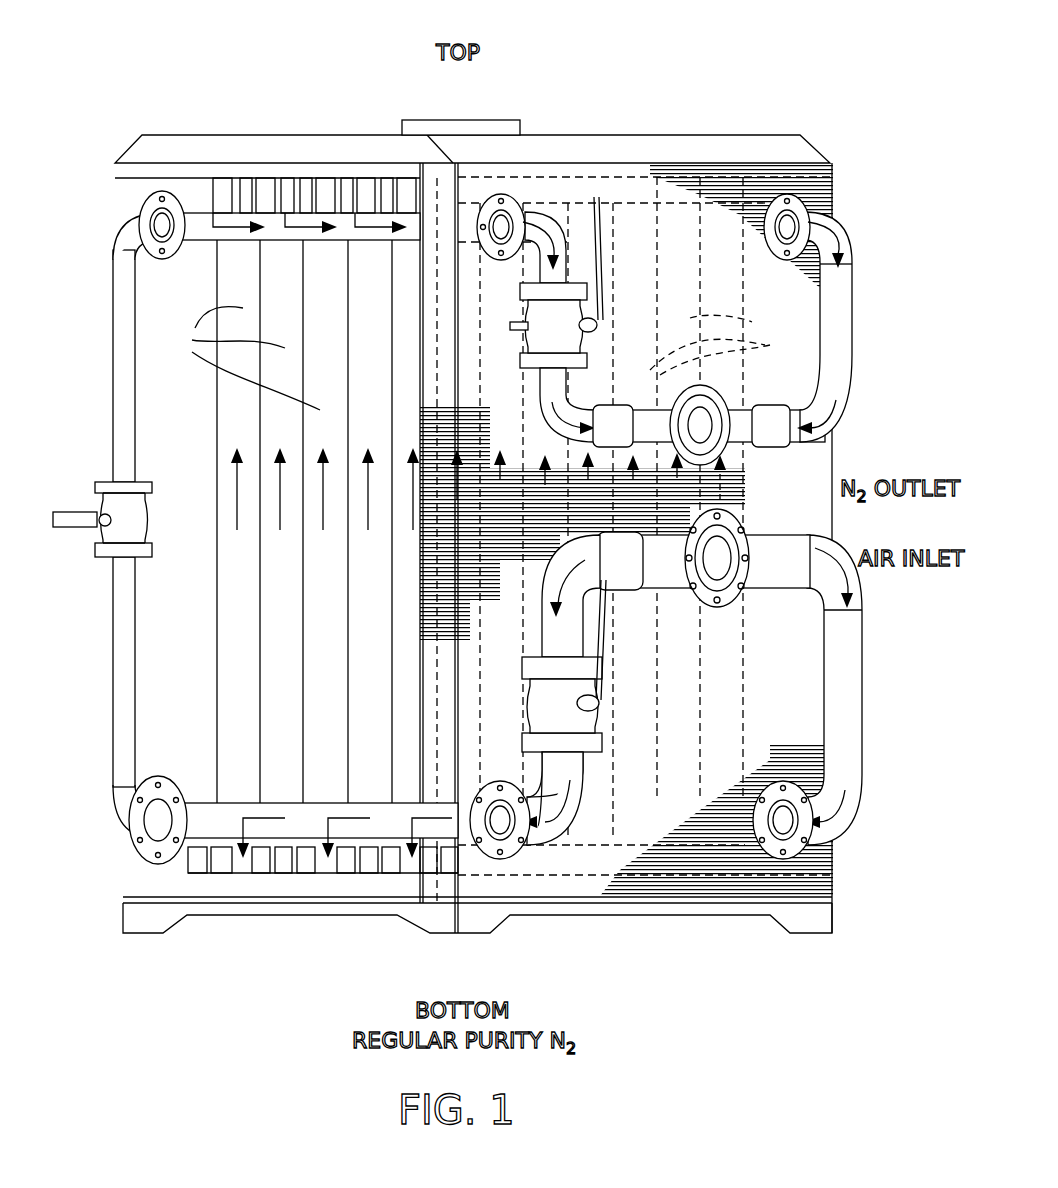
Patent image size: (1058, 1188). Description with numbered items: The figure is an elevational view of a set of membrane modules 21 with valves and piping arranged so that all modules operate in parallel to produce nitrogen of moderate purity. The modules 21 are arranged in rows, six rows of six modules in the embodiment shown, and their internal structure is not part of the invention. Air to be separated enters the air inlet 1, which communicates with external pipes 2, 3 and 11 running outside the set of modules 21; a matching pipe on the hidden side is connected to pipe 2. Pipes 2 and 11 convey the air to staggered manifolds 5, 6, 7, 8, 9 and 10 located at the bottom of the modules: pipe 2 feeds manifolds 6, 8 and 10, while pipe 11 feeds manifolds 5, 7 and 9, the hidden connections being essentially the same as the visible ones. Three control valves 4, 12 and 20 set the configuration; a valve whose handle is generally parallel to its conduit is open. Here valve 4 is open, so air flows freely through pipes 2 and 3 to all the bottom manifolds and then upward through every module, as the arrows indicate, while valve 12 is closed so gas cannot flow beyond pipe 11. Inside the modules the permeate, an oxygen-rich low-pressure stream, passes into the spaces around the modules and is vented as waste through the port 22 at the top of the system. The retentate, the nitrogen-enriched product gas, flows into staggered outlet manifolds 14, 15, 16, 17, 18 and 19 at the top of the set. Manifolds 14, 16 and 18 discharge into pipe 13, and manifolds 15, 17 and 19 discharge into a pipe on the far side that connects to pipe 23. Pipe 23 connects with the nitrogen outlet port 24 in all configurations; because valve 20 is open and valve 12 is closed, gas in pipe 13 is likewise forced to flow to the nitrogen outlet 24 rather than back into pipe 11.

The air inlet 1 is at (728, 548).
The pipe 2 is at (843, 684).
The pipe 3 is at (560, 645).
The control valve 4 is at (618, 700).
The manifold 5 is at (412, 875).
The manifold 6 is at (372, 875).
The manifold 7 is at (340, 875).
The manifold 8 is at (288, 875).
The manifold 9 is at (258, 875).
The manifold 10 is at (207, 875).
The pipe 11 is at (125, 652).
The control valve 12 is at (88, 497).
The pipe 13 is at (195, 178).
The outlet manifold 14 is at (195, 218).
The outlet manifold 15 is at (222, 198).
The outlet manifold 16 is at (257, 190).
The outlet manifold 17 is at (292, 197).
The outlet manifold 18 is at (352, 193).
The outlet manifold 19 is at (390, 197).
The control valve 20 is at (606, 318).
The membrane modules 21 is at (482, 358).
The vent port 22 is at (500, 118).
The pipe 23 is at (843, 298).
The nitrogen outlet port 24 is at (716, 426).